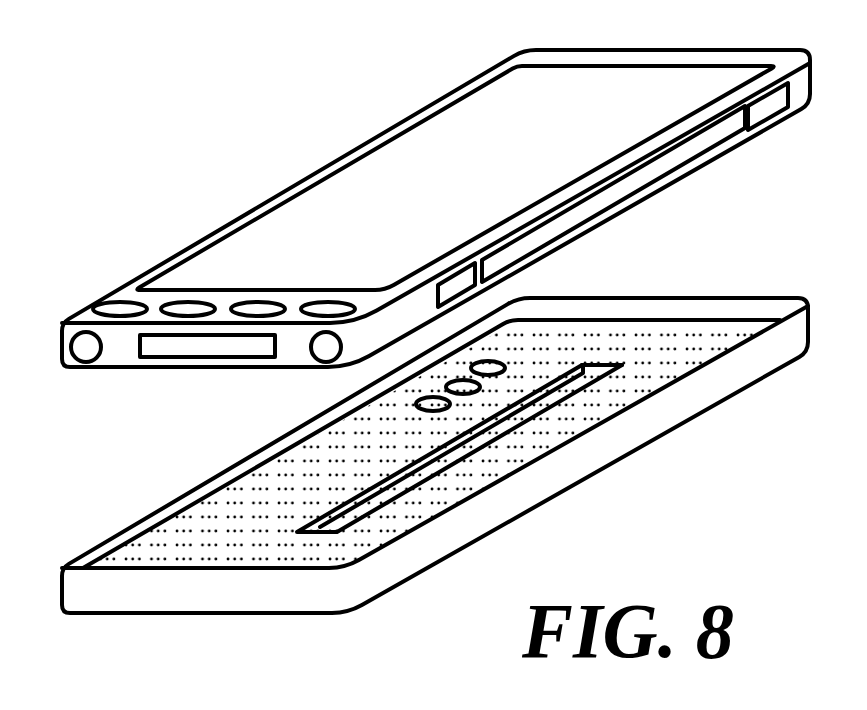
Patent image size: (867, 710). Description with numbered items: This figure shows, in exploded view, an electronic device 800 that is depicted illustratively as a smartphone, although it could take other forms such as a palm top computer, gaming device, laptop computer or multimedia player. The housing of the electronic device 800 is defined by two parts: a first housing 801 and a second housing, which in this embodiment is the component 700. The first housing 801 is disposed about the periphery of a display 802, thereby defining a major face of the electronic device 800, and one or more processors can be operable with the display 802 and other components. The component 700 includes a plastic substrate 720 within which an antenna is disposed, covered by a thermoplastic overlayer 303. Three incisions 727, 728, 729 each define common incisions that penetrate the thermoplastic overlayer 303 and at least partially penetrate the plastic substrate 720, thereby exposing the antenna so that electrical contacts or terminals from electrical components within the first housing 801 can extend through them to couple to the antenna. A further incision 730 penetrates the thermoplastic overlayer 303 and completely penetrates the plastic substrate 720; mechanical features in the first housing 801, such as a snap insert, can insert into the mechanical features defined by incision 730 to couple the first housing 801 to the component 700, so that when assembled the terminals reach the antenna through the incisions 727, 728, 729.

The electronic device 800 is at (436, 237).
The display 802 is at (425, 173).
The first housing 801 is at (127, 355).
The component 700 is at (437, 427).
The thermoplastic overlayer 303 is at (431, 444).
The plastic substrate 720 is at (554, 425).
The incision 727 is at (428, 411).
The incision 728 is at (540, 402).
The incision 729 is at (505, 362).
The incision 730 is at (598, 363).